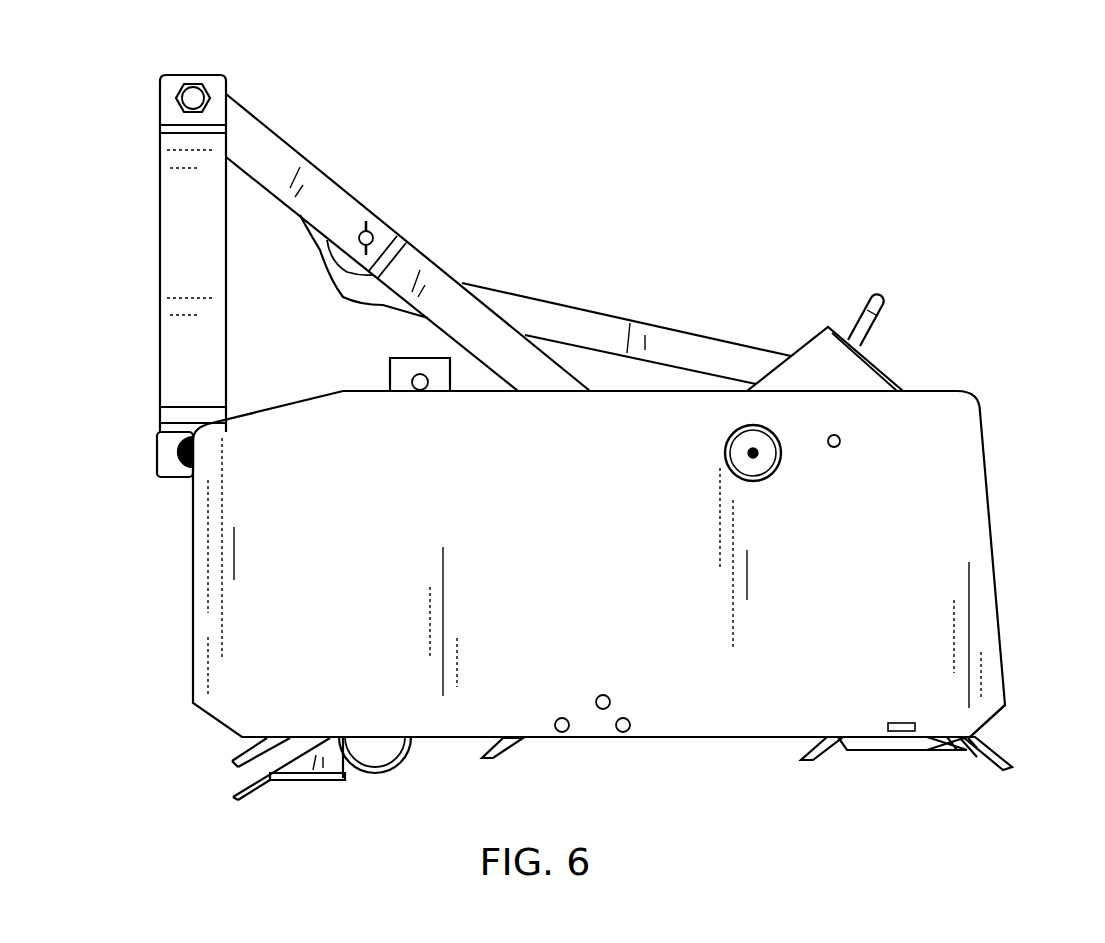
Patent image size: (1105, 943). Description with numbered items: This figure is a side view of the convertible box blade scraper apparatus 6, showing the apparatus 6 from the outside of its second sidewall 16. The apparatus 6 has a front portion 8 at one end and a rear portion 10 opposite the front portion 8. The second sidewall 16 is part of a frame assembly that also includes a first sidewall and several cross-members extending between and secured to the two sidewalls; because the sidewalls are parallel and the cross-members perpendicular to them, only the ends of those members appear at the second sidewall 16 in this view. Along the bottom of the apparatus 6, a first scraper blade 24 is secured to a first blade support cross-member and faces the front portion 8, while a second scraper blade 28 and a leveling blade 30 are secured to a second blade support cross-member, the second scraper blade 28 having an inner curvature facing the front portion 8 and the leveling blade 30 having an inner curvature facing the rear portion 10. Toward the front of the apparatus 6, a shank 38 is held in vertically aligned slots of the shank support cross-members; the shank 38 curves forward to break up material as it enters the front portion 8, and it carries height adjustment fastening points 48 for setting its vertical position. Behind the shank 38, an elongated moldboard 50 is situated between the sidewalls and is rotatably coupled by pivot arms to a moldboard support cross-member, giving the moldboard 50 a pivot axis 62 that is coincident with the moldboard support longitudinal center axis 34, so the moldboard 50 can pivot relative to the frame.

The convertible box blade scraper apparatus 6 is at (636, 122).
The front portion 8 is at (182, 542).
The rear portion 10 is at (1014, 554).
The second sidewall 16 is at (206, 627).
The first scraper blade 24 is at (502, 758).
The second scraper blade 28 is at (817, 753).
The leveling blade 30 is at (990, 757).
The moldboard support longitudinal center axis 34 is at (731, 381).
The pivot axis 62 is at (753, 448).
The shank 38 is at (373, 758).
The height adjustment fastening point 48 is at (413, 383).
The moldboard 50 is at (884, 345).